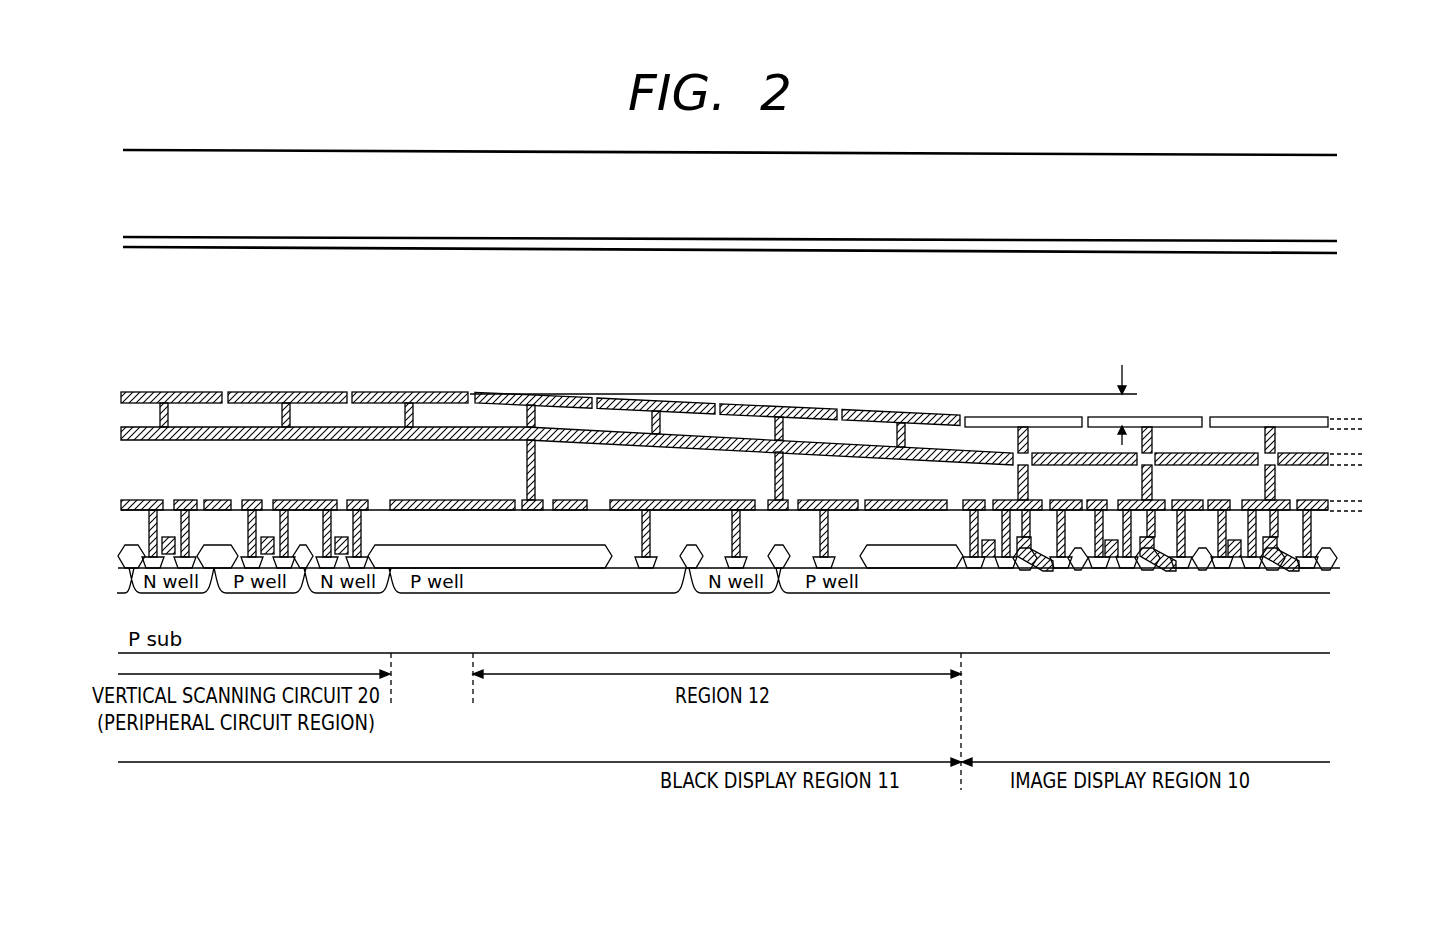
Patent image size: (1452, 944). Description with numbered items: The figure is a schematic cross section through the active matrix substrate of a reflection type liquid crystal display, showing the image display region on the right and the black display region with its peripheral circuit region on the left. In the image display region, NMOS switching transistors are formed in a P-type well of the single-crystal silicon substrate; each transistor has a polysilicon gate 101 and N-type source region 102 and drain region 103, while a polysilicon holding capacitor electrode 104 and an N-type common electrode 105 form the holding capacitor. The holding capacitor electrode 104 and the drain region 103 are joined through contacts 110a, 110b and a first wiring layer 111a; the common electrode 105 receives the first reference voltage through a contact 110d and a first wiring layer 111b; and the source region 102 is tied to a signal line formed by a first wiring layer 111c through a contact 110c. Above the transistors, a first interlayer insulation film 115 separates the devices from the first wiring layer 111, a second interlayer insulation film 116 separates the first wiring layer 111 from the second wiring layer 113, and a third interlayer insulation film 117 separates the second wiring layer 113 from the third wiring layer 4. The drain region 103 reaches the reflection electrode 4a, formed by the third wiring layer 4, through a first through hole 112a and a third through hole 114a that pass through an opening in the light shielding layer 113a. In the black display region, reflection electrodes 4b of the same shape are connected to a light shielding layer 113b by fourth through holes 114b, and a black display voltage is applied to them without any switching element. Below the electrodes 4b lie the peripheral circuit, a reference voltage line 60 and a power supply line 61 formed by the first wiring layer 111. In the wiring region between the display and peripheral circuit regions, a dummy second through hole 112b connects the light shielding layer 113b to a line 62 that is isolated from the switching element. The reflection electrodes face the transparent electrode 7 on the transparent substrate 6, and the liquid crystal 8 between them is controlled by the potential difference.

The third wiring layer 4 is at (1360, 422).
The reflection electrode 4a is at (1282, 417).
The reflection electrode 4b is at (425, 392).
The transparent substrate 6 is at (1322, 201).
The transparent electrode 7 is at (1330, 248).
The liquid crystal 8 is at (1330, 316).
The reference voltage line 60 is at (426, 500).
The power supply line 61 is at (645, 500).
The line 62 is at (540, 500).
The gate 101 is at (1230, 577).
The source region 102 is at (1205, 577).
The drain region 103 is at (1250, 577).
The holding capacitor electrode 104 is at (1277, 577).
The common electrode 105 is at (1307, 577).
The contact 110a is at (1160, 577).
The contact 110b is at (1118, 577).
The contact 110c is at (1092, 577).
The contact 110d is at (1045, 577).
The first wiring layer 111 is at (1360, 515).
The first wiring layer 111a is at (1128, 500).
The first wiring layer 111b is at (1200, 490).
The first wiring layer 111c is at (1090, 500).
The first through hole 112a is at (1276, 488).
The second through hole 112b is at (786, 489).
The second wiring layer 113 is at (1360, 467).
The light shielding layer 113a is at (1225, 453).
The light shielding layer 113b is at (740, 440).
The third through hole 114a is at (1276, 443).
The fourth through hole 114b is at (414, 418).
The first interlayer insulation film 115 is at (1360, 538).
The second interlayer insulation film 116 is at (1360, 490).
The third interlayer insulation film 117 is at (1360, 443).